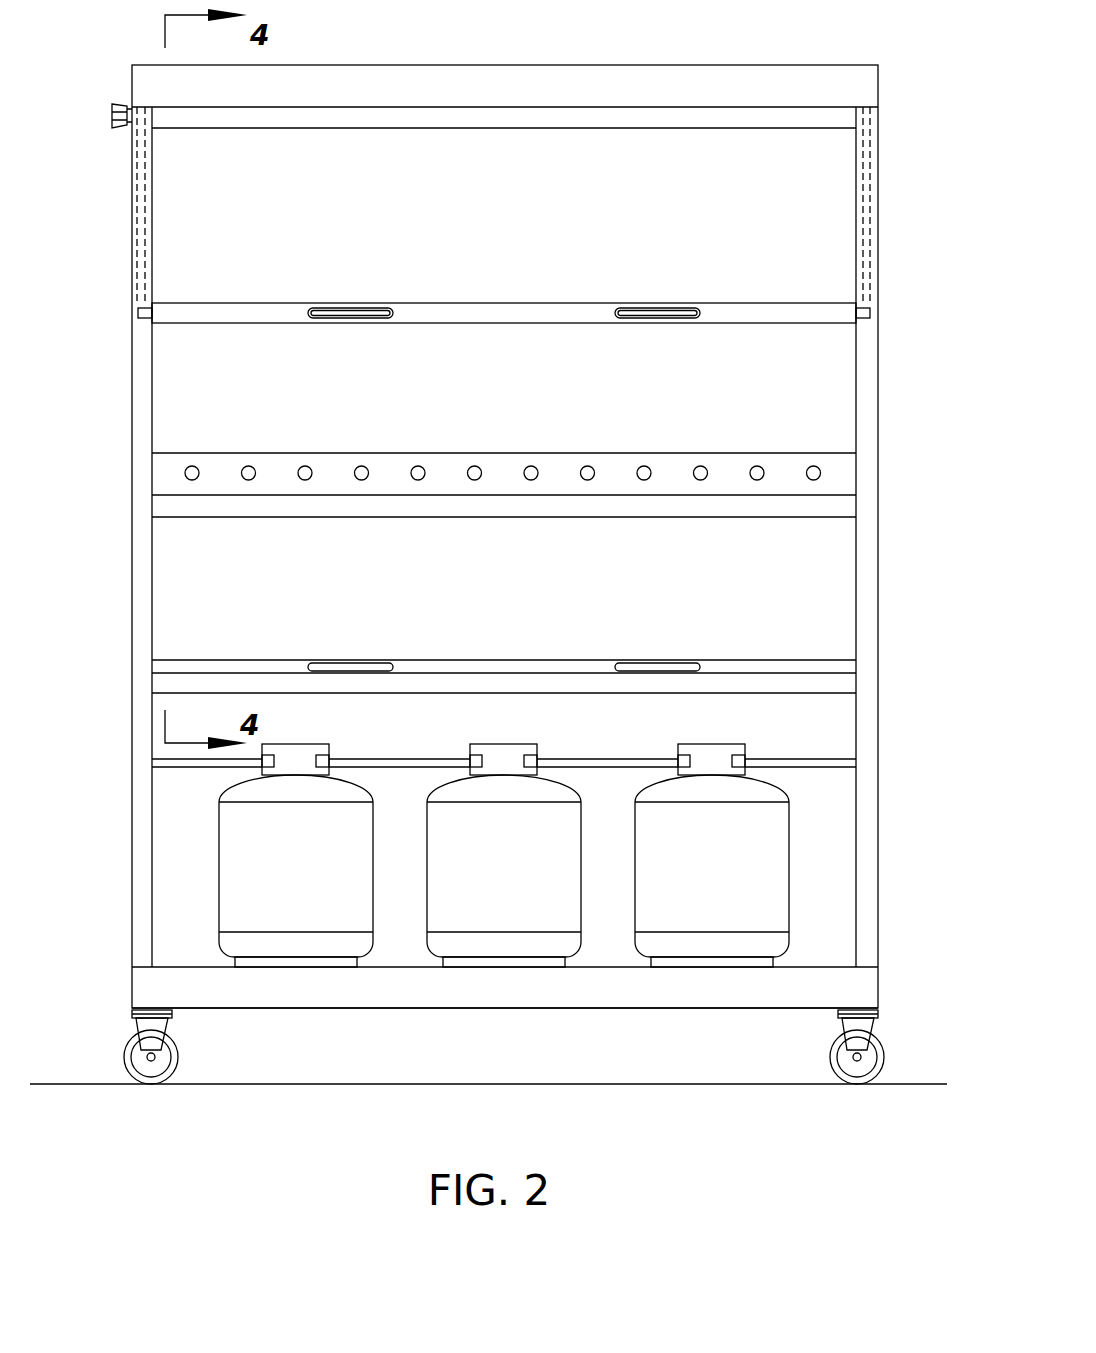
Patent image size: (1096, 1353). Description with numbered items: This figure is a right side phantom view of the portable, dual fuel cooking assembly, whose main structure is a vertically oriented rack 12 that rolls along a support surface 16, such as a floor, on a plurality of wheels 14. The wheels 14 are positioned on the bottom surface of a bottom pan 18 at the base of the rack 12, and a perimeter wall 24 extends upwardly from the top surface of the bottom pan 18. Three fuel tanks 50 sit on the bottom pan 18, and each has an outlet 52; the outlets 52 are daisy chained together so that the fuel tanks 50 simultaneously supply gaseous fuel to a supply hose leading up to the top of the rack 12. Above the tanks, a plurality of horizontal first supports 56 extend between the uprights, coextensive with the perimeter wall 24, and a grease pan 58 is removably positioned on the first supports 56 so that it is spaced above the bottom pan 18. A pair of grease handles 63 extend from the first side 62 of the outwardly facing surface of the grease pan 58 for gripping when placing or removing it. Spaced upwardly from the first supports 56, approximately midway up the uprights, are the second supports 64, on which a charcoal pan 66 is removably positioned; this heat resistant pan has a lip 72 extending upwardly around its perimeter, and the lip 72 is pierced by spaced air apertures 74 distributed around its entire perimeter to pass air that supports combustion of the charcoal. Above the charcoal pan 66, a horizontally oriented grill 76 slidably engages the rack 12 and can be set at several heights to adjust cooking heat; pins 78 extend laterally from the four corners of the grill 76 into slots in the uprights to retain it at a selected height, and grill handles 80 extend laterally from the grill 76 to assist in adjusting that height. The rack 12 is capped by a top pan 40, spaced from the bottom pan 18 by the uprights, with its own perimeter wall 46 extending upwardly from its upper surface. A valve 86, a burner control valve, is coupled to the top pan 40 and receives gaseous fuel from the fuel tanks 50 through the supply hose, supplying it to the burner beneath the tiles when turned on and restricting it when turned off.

The rack 12 is at (96, 340).
The wheels 14 is at (178, 1058).
The support surface 16 is at (72, 1084).
The bottom pan 18 is at (877, 993).
The perimeter wall 24 is at (817, 967).
The top pan 40 is at (878, 87).
The perimeter wall 46 is at (513, 66).
The fuel tanks 50 is at (475, 902).
The outlet 52 is at (262, 766).
The first supports 56 is at (818, 672).
The grease pan 58 is at (176, 660).
The first side 62 is at (835, 673).
The grease handles 63 is at (355, 662).
The second supports 64 is at (186, 517).
The charcoal pan 66 is at (152, 473).
The lip 72 is at (330, 452).
The air apertures 74 is at (474, 468).
The grill 76 is at (225, 304).
The pins 78 is at (143, 320).
The grill handles 80 is at (355, 308).
The valve 86 is at (112, 112).